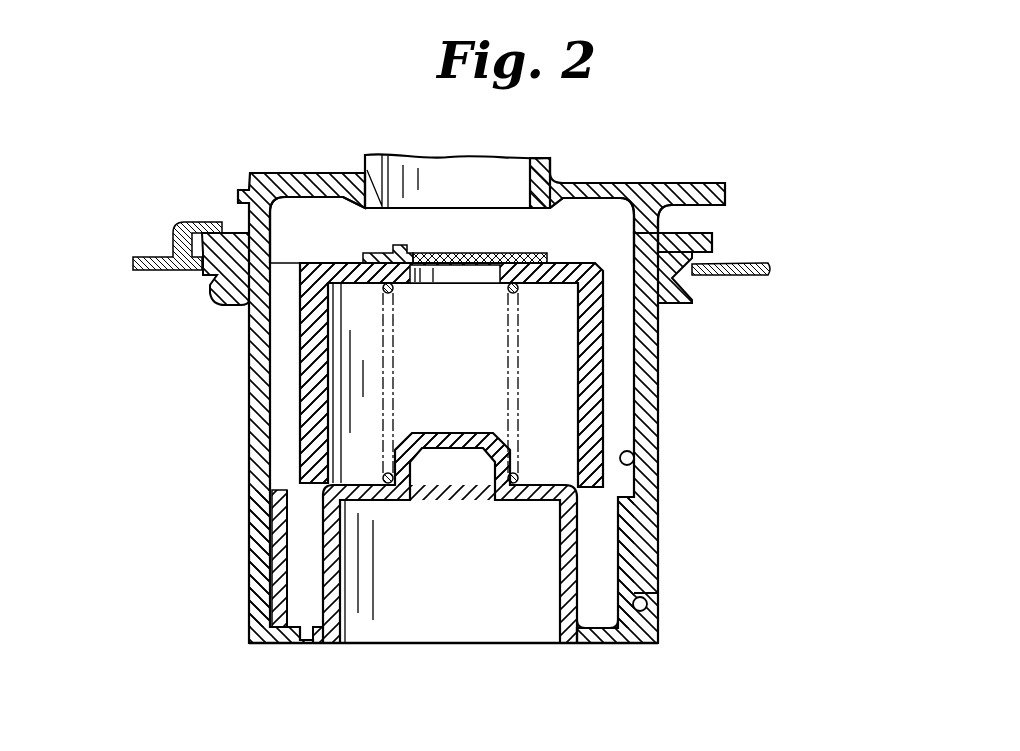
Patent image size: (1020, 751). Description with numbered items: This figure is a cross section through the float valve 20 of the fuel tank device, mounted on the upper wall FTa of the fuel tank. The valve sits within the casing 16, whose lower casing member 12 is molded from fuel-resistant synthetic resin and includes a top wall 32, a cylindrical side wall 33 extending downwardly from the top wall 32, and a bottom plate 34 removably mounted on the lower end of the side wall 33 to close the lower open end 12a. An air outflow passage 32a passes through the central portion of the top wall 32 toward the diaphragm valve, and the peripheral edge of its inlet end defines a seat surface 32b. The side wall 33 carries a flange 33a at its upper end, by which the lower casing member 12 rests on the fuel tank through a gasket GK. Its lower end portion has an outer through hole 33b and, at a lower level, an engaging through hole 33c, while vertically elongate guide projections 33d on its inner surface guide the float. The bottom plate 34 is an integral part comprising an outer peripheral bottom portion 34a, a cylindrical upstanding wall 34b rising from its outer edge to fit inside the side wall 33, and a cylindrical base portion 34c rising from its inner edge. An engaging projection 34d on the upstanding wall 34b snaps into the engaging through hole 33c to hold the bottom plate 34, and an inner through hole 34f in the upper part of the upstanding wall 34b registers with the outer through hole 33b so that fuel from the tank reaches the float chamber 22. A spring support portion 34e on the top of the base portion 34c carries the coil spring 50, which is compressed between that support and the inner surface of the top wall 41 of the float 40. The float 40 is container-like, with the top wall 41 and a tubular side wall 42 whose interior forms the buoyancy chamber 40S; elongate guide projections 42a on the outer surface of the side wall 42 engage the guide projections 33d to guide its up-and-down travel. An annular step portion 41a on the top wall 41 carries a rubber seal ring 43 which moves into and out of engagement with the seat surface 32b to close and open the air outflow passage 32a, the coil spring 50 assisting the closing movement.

The float valve 20 is at (599, 210).
The float chamber 22 is at (303, 198).
The top wall 32 is at (332, 185).
The air outflow passage 32a is at (512, 173).
The seat surface 32b is at (374, 210).
The side wall 33 is at (486, 396).
The flange 33a is at (712, 241).
The outer through hole 33b is at (262, 558).
The engaging through hole 33c is at (650, 608).
The guide projections 33d is at (635, 463).
The casing 16 is at (657, 388).
The lower casing member 12 is at (666, 224).
The lower open end 12a is at (607, 618).
The float 40 is at (300, 382).
The buoyancy chamber 40S is at (433, 340).
The top wall 41 is at (303, 262).
The annular step portion 41a is at (412, 250).
The side wall 42 is at (300, 327).
The outer cylindrical wall 42a is at (623, 422).
The seal ring 43 is at (538, 254).
The coil spring 50 is at (520, 343).
The bottom plate 34 is at (560, 590).
The outer peripheral bottom portion 34a is at (331, 635).
The upstanding wall 34b is at (301, 567).
The base portion 34c is at (391, 495).
The engaging projection 34d is at (656, 585).
The spring support portion 34e is at (443, 438).
The inner through hole 34f is at (270, 517).
The gasket GK is at (696, 290).
The upper wall FTa is at (771, 268).